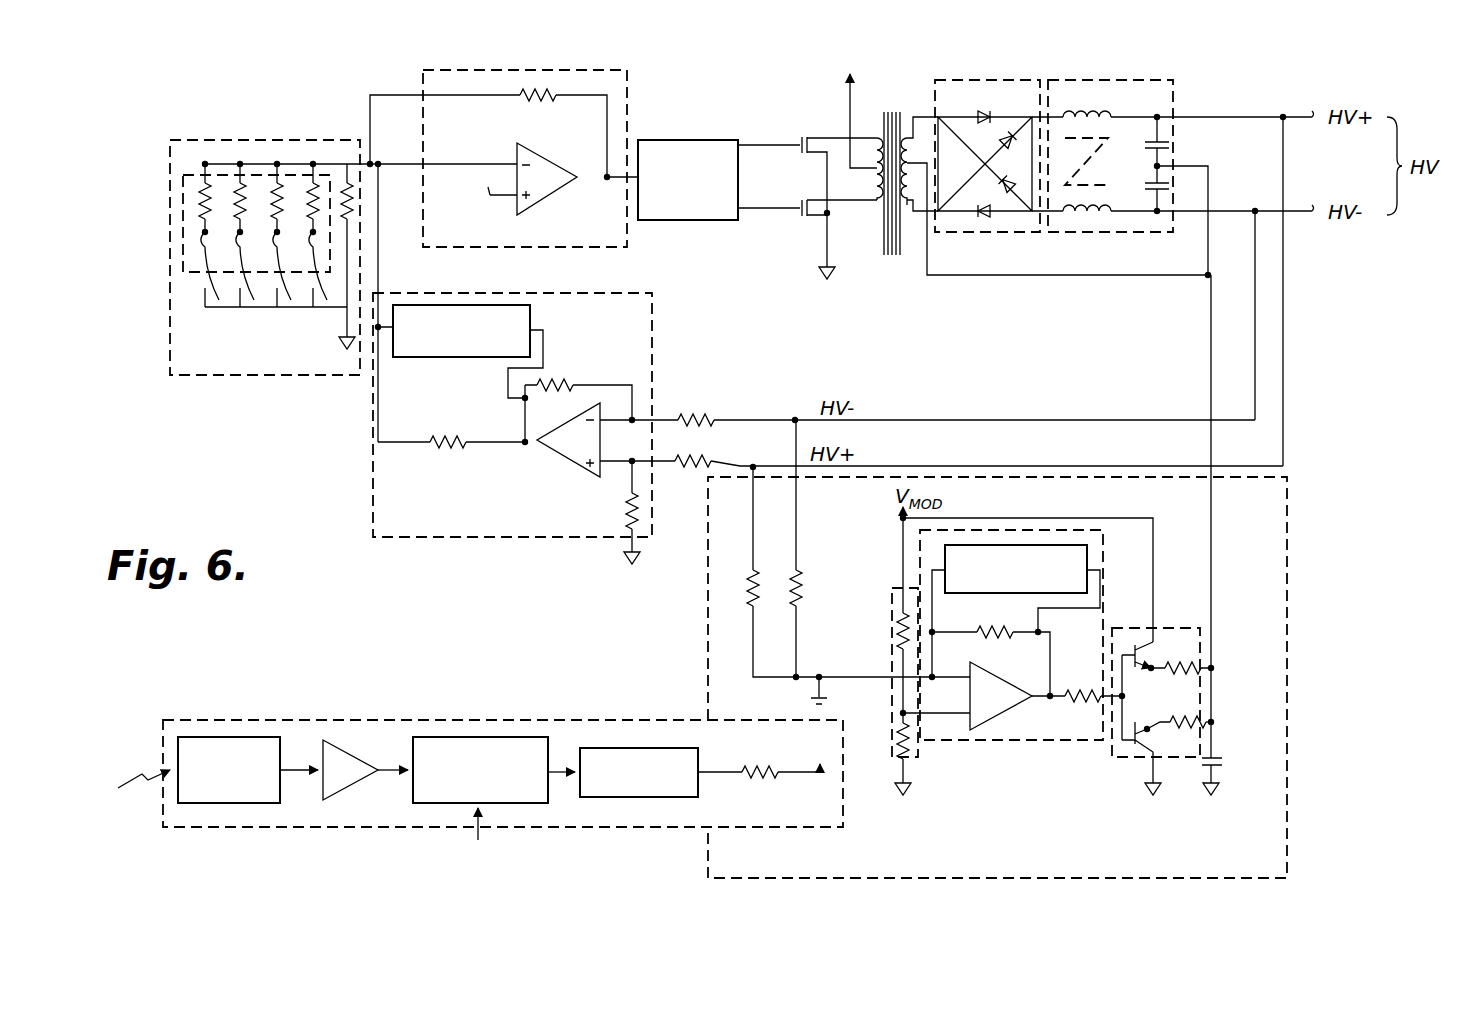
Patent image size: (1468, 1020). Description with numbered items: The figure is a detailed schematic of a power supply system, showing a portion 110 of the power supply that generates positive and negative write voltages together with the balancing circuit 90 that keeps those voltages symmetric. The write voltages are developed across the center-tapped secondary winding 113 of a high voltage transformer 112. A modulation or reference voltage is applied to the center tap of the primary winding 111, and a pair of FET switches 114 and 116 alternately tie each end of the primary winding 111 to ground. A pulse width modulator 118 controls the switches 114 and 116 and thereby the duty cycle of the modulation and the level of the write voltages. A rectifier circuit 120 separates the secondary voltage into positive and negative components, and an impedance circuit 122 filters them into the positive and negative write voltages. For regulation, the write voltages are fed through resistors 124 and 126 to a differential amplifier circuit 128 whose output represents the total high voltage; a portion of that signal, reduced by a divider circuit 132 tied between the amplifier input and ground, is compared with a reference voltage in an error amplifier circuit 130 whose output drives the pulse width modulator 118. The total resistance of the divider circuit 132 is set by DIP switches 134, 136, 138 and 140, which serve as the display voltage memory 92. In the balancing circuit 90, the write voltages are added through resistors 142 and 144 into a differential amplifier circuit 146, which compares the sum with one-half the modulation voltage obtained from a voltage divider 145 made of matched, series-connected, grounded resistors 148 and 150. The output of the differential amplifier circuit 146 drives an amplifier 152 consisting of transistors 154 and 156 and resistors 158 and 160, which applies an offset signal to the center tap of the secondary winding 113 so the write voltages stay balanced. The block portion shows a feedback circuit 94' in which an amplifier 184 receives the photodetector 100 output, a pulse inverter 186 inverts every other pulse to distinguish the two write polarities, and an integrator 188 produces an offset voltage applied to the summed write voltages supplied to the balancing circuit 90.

The balancing circuit 90 is at (1287, 603).
The display voltage memory 92 is at (204, 250).
The feedback circuit 94' is at (480, 778).
The photodetector 100 is at (230, 737).
The portion of the power supply 110 is at (1082, 60).
The primary winding 111 is at (868, 190).
The high voltage transformer 112 is at (883, 88).
The center-tapped secondary winding 113 is at (917, 136).
The FET switch 114 is at (803, 128).
The FET switch 116 is at (798, 222).
The pulse width modulator 118 is at (690, 140).
The rectifier circuit 120 is at (1010, 80).
The impedance circuit 122 is at (1118, 80).
The resistor 124 is at (690, 416).
The resistor 126 is at (678, 472).
The differential amplifier circuit 128 is at (472, 527).
The error amplifier circuit 130 is at (565, 70).
The divider circuit 132 is at (257, 140).
The switch 134 is at (240, 250).
The switch 136 is at (278, 250).
The switch 138 is at (315, 250).
The switch 140 is at (345, 300).
The resistor 142 is at (753, 577).
The resistor 144 is at (798, 582).
The voltage divider 145 is at (908, 659).
The differential amplifier circuit 146 is at (1005, 732).
The resistor 148 is at (903, 622).
The resistor 150 is at (903, 732).
The amplifier 152 is at (1145, 701).
The transistor 154 is at (1136, 647).
The transistor 156 is at (1137, 728).
The resistor 158 is at (1185, 663).
The resistor 160 is at (1188, 730).
The amplifier 184 is at (352, 755).
The pulse inverter 186 is at (477, 737).
The integrator 188 is at (623, 748).